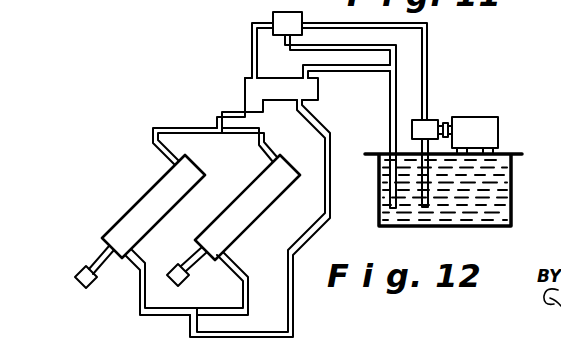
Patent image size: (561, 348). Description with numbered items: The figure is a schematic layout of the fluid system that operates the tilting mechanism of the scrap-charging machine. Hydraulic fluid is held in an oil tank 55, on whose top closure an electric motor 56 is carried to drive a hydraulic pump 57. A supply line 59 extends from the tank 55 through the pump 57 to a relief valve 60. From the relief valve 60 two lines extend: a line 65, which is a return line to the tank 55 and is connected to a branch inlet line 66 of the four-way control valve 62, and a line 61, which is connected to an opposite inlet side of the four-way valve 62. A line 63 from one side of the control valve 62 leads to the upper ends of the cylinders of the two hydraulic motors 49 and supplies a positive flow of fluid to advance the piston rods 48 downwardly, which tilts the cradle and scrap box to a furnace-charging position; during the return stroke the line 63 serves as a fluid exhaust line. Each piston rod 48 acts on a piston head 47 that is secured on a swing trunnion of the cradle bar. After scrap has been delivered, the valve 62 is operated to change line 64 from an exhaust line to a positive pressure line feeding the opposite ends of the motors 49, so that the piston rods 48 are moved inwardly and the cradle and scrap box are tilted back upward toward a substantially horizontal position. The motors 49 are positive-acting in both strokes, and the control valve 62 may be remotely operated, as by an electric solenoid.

The piston head 47 is at (75, 277).
The piston rod 48 is at (97, 258).
The fluid or hydraulic motor 49 is at (150, 198).
The oil tank 55 is at (514, 181).
The electric motor 56 is at (486, 117).
The hydraulic pump 57 is at (432, 119).
The supply line 59 is at (429, 45).
The relief valve 60 is at (278, 12).
The line 61 is at (252, 43).
The 4-way control valve 62 is at (245, 88).
The line 63 is at (217, 117).
The line 64 is at (329, 132).
The line 65 is at (302, 50).
The branch inlet line 66 is at (344, 70).